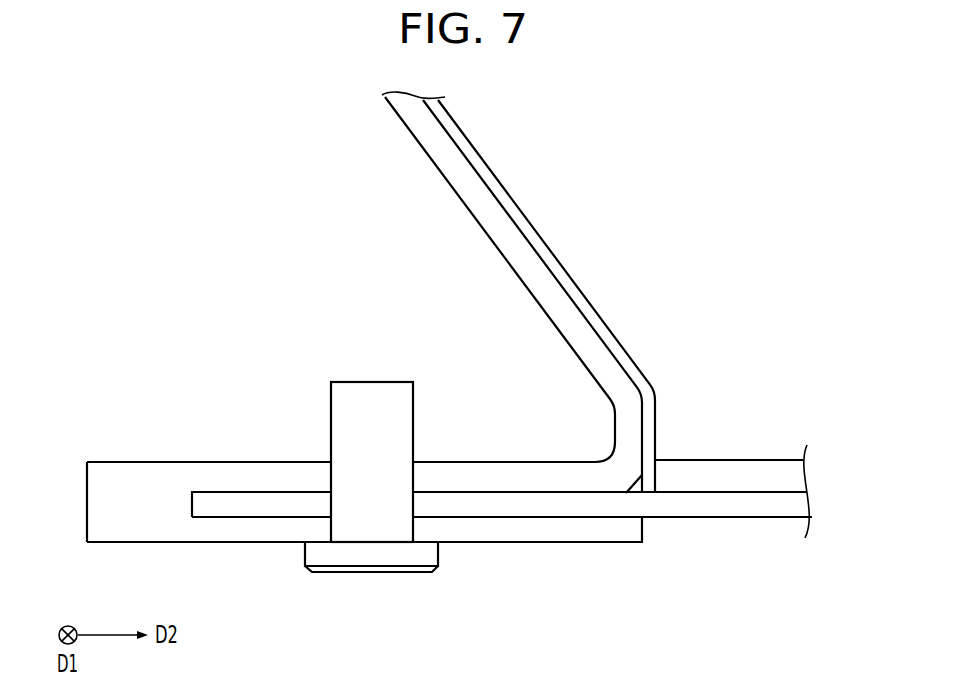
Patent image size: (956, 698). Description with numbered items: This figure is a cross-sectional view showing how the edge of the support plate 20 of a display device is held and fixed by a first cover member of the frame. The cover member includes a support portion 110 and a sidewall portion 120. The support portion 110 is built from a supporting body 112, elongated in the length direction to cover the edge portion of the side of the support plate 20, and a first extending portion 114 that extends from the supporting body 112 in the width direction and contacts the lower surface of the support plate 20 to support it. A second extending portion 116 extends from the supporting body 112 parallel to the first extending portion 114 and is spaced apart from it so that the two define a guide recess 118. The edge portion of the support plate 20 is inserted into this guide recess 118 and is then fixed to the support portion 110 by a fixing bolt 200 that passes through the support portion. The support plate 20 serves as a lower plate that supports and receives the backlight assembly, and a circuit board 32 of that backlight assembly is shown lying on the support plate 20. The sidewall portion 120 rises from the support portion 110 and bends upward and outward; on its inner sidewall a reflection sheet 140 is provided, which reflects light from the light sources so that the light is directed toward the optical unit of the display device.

The support portion 110 is at (342, 513).
The supporting body 112 is at (135, 522).
The first extending portion 114 is at (265, 532).
The second extending portion 116 is at (257, 473).
The guide recess 118 is at (575, 521).
The sidewall portion 120 is at (443, 175).
The reflection sheet 140 is at (480, 168).
The fixing bolt 200 is at (372, 552).
The support plate 20 is at (763, 505).
The circuit board 32 is at (703, 475).